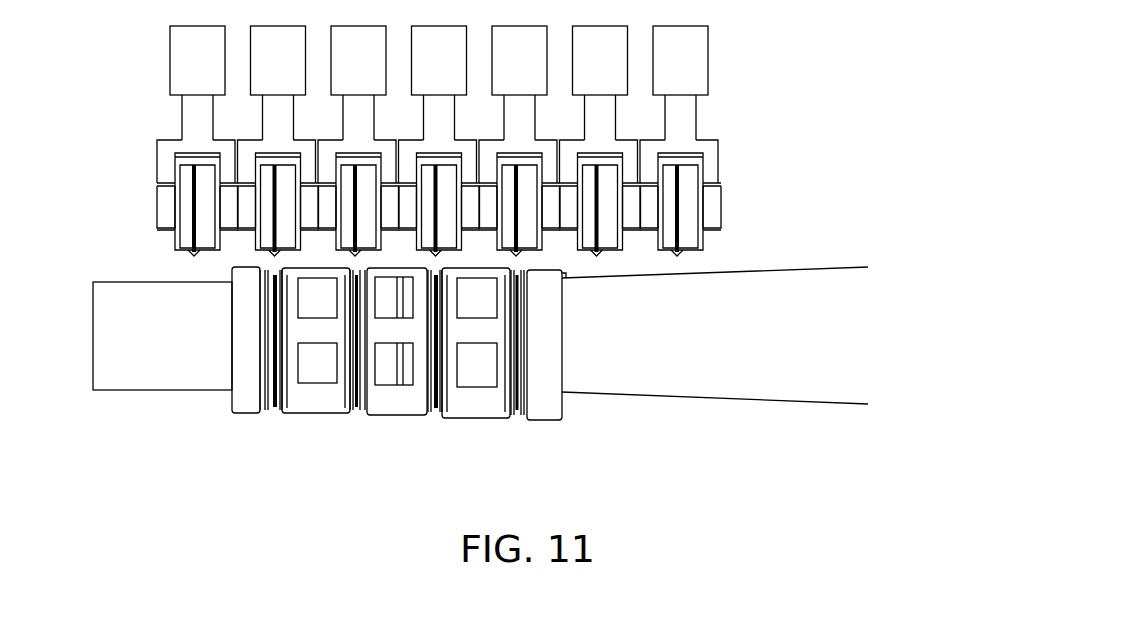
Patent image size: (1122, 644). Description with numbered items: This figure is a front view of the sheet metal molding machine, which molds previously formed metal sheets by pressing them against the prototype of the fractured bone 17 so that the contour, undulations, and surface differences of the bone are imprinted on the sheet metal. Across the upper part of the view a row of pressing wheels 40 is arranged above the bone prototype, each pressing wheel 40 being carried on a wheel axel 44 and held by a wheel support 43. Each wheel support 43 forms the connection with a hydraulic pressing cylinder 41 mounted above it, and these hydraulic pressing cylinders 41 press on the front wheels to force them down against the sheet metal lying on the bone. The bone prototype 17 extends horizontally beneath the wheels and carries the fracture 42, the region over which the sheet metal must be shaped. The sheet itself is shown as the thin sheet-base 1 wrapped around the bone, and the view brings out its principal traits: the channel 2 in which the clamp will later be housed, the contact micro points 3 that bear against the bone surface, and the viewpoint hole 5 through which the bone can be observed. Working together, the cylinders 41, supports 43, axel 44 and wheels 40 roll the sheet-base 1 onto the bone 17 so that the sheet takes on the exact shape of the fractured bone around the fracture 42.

The thin sheet-base 1 is at (247, 414).
The channel 2 is at (357, 416).
The contact micro points 3 is at (274, 414).
The viewpoint hole 5 is at (337, 383).
The prototype of the fractured bone 17 is at (822, 266).
The pressing wheels 40 is at (177, 243).
The hydraulic pressing cylinders 41 is at (708, 62).
The fracture 42 is at (402, 416).
The wheel supports 43 is at (697, 113).
The wheel axel 44 is at (157, 209).